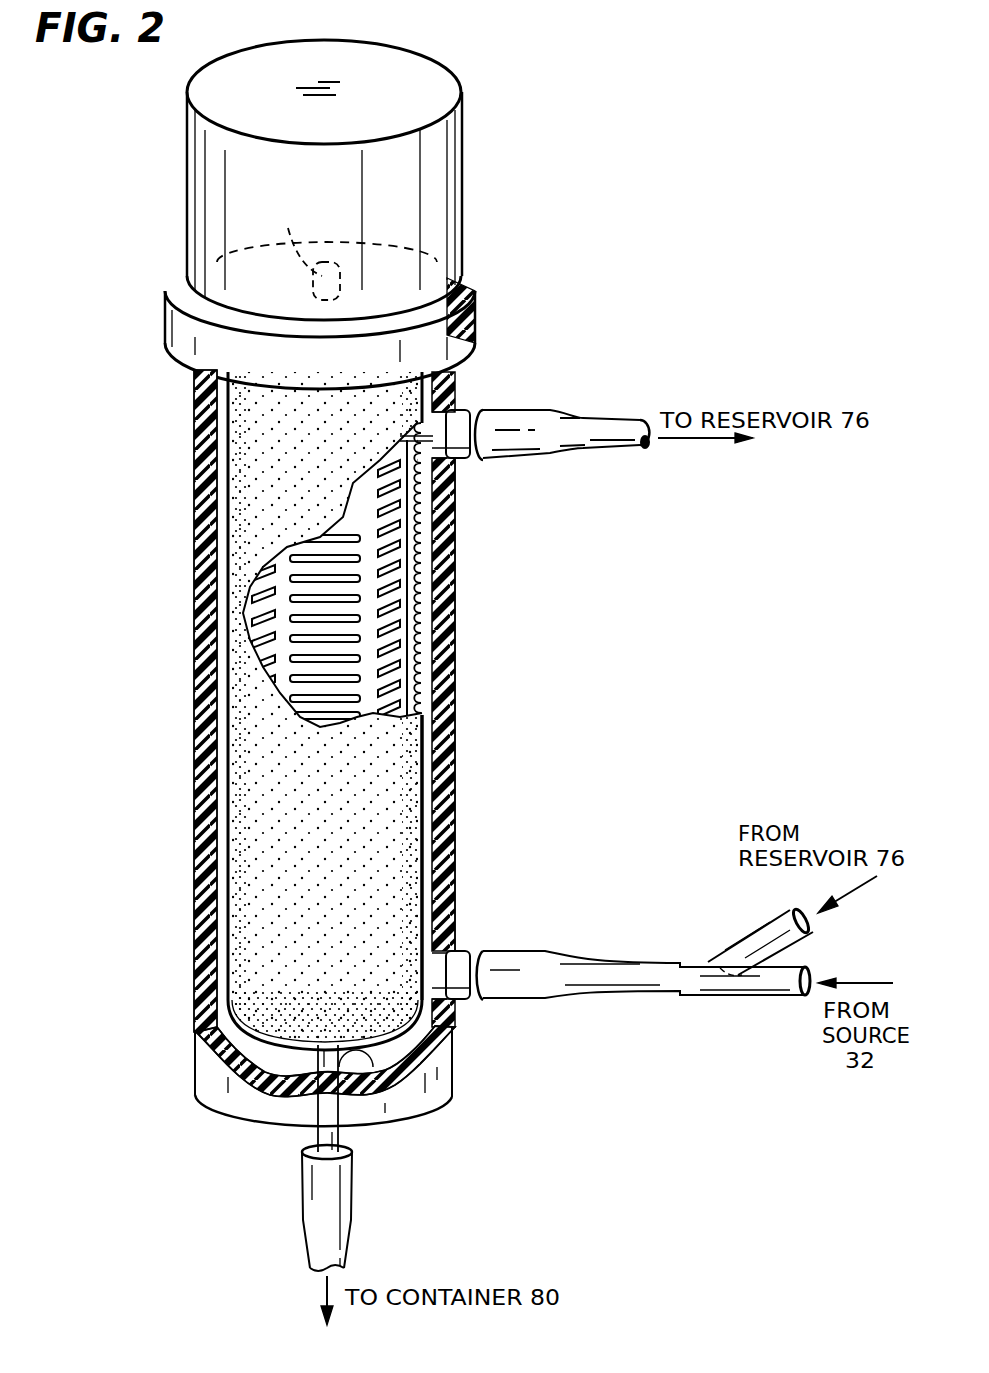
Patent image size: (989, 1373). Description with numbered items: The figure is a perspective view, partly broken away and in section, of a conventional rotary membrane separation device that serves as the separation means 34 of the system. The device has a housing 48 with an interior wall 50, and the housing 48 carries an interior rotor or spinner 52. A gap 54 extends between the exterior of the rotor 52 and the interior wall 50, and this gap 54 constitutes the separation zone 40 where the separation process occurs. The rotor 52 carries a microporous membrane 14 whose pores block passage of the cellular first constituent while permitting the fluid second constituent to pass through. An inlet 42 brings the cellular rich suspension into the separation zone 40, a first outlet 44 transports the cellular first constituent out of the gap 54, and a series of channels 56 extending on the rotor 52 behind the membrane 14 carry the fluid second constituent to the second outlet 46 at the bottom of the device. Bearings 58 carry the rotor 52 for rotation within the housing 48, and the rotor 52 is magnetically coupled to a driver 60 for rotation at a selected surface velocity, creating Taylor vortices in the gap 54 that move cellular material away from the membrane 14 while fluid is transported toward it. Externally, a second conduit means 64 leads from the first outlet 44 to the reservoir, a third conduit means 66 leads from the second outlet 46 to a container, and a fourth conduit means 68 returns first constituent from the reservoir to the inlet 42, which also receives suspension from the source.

The microporous membrane 14 is at (400, 882).
The separation means 34 is at (185, 587).
The separation zone 40 is at (425, 838).
The inlet 42 is at (458, 999).
The first outlet 44 is at (458, 412).
The second outlet 46 is at (312, 1135).
The housing 48 is at (440, 765).
The interior wall 50 is at (427, 725).
The rotor 52 is at (405, 560).
The gap 54 is at (425, 630).
The channels 56 is at (338, 570).
The bearings 58 is at (291, 231).
The driver 60 is at (432, 178).
The second conduit means 64 is at (585, 430).
The third conduit means 66 is at (345, 1183).
The fourth conduit means 68 is at (770, 930).